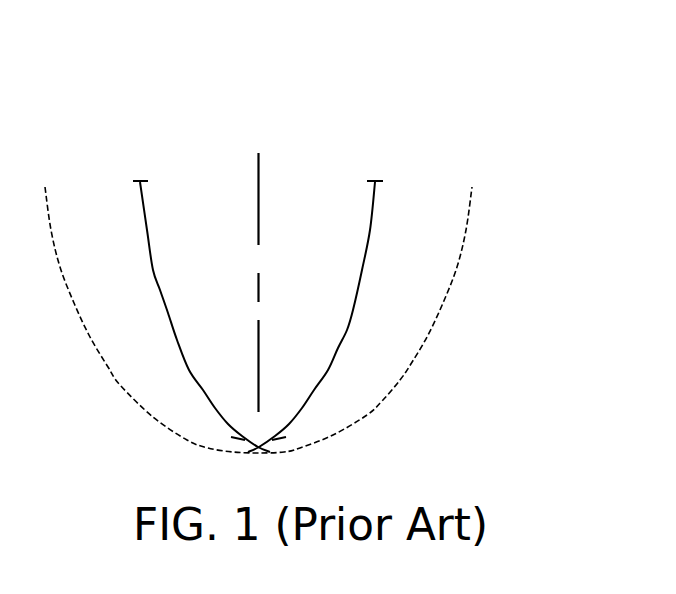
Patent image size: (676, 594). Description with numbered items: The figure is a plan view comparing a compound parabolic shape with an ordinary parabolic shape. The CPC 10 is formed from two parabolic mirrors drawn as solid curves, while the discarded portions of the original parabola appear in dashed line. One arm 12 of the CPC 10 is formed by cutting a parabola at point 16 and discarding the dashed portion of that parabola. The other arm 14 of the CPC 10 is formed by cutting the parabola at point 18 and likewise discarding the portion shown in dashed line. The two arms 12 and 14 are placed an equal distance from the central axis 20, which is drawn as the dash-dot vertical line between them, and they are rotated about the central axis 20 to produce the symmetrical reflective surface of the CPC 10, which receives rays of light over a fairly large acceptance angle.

The CPC 10 is at (425, 95).
The arm 12 is at (353, 319).
The arm 14 is at (158, 290).
The point 16 is at (290, 433).
The point 18 is at (245, 431).
The central axis 20 is at (272, 182).